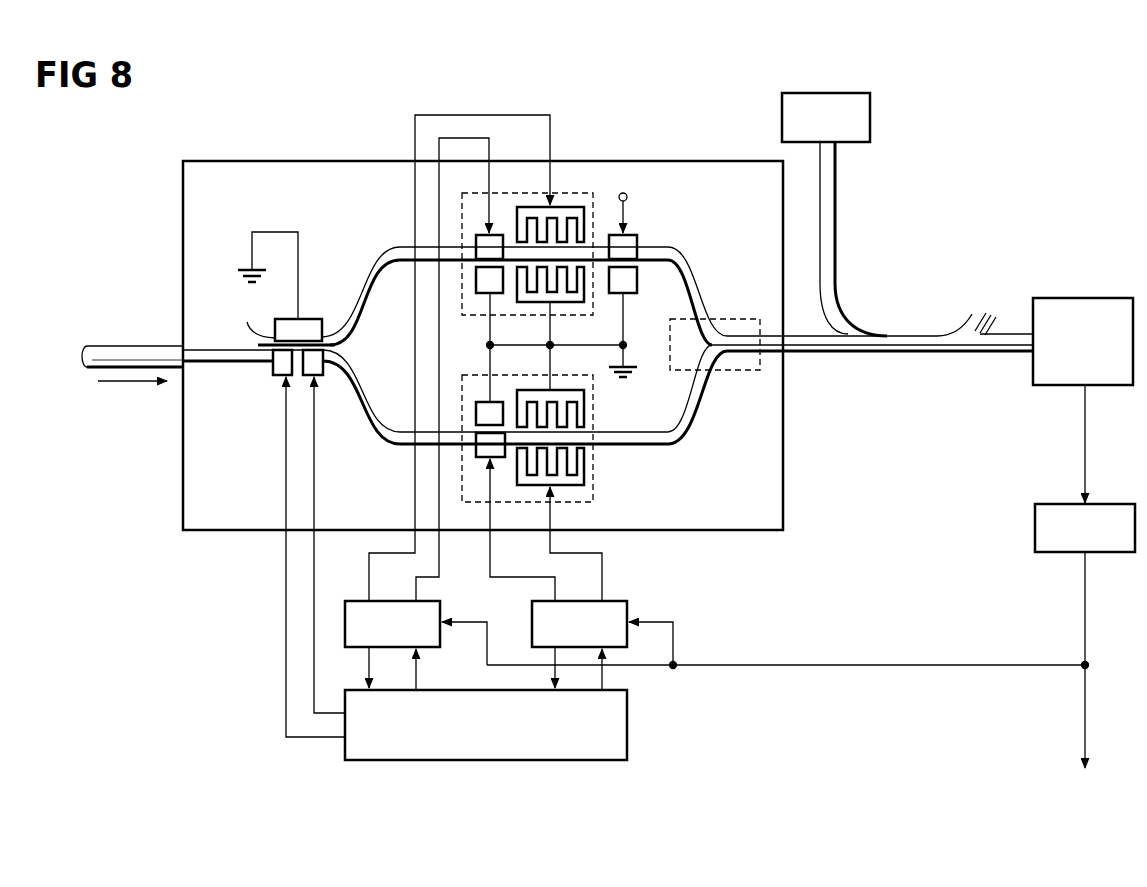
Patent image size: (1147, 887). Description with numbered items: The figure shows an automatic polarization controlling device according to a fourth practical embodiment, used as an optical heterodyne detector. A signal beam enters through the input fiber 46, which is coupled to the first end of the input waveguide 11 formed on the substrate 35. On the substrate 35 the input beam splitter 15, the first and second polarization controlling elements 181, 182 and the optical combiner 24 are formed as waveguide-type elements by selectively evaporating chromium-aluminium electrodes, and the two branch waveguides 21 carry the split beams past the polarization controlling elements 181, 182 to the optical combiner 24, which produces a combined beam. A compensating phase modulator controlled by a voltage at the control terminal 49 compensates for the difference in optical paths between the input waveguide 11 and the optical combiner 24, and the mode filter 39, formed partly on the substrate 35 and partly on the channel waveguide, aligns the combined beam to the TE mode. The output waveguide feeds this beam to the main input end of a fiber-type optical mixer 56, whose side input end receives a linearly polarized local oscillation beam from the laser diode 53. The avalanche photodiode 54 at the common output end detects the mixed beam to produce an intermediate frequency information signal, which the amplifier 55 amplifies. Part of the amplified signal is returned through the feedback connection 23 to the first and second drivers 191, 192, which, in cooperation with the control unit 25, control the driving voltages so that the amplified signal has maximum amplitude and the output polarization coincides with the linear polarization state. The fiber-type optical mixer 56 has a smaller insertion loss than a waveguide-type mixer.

The input waveguide 11 is at (208, 355).
The input beam splitter 15 is at (307, 315).
The branch waveguide 21 is at (374, 305).
The feedback connection 23 is at (845, 665).
The optical combiner 24 is at (730, 370).
The control unit 25 is at (627, 737).
The substrate 35 is at (707, 161).
The mode filter 39 is at (640, 240).
The input fiber 46 is at (112, 352).
The control terminal 49 is at (637, 181).
The laser diode 53 is at (875, 110).
The avalanche photodiode 54 is at (1100, 298).
The amplifier 55 is at (1104, 504).
The fiber-type optical mixer 56 is at (897, 332).
The first polarization controlling element 181 is at (569, 193).
The second polarization controlling element 182 is at (593, 490).
The first driver 191 is at (350, 600).
The second driver 192 is at (621, 600).